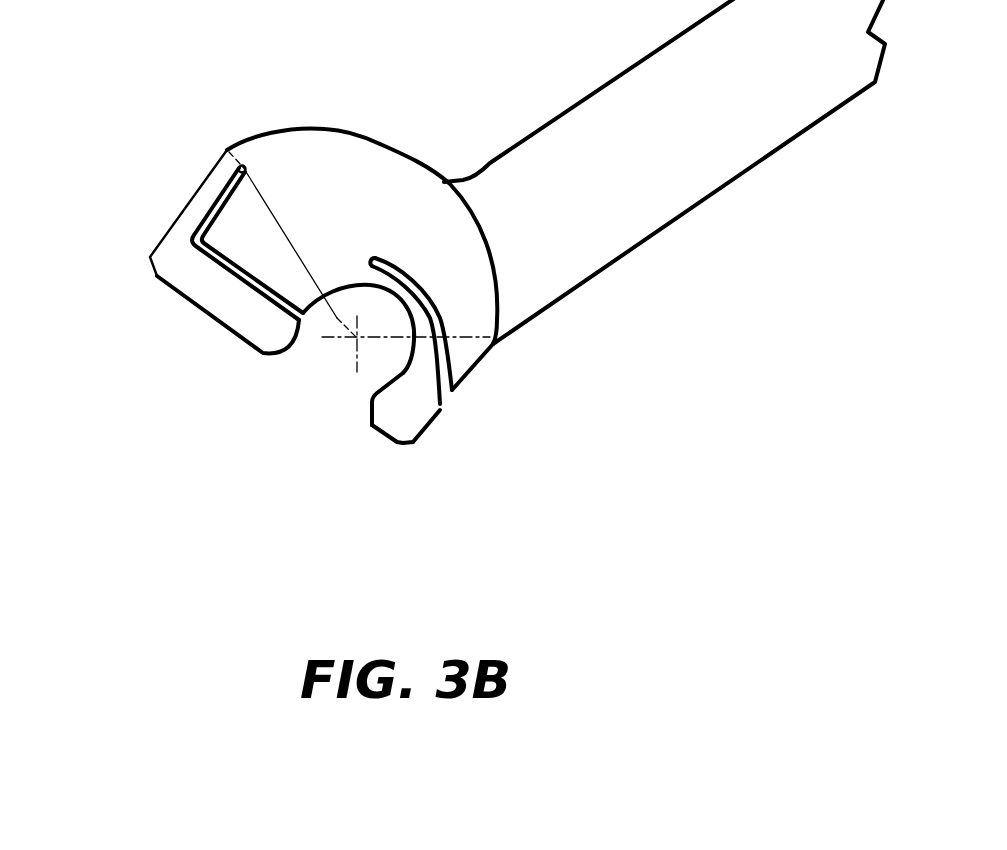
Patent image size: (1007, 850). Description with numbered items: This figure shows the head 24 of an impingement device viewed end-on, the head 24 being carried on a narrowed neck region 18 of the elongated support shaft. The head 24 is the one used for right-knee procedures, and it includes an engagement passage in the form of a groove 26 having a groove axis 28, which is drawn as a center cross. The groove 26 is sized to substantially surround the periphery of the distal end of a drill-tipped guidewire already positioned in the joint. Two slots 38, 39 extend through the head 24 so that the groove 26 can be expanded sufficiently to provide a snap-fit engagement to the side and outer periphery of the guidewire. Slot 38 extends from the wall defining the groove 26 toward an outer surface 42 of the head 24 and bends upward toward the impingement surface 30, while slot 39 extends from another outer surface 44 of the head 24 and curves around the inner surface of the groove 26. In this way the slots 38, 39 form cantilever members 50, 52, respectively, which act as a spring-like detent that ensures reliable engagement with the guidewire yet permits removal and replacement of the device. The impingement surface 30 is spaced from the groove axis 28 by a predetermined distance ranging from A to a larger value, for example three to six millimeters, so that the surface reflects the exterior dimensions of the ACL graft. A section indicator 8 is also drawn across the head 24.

The section line arrow 8 is at (278, 202).
The narrowed neck region 18 is at (682, 147).
The head 24 is at (284, 150).
The groove 26 is at (400, 375).
The groove axis 28 is at (355, 338).
The impingement surface 30 is at (390, 146).
The slot 38 is at (207, 253).
The slot 39 is at (403, 273).
The outer surface 42 is at (182, 208).
The outer surface 44 is at (435, 418).
The cantilever member 50 is at (210, 300).
The cantilever member 52 is at (402, 442).
The predetermined distance A is at (465, 345).